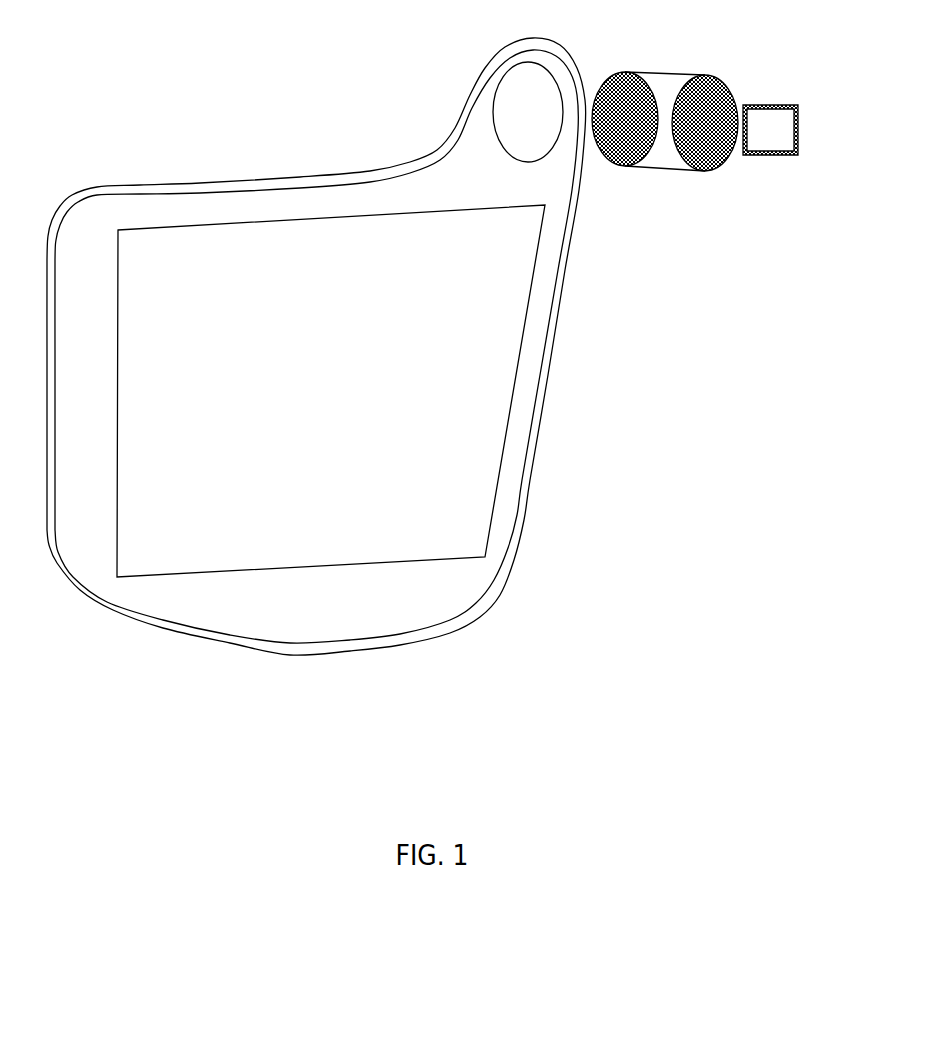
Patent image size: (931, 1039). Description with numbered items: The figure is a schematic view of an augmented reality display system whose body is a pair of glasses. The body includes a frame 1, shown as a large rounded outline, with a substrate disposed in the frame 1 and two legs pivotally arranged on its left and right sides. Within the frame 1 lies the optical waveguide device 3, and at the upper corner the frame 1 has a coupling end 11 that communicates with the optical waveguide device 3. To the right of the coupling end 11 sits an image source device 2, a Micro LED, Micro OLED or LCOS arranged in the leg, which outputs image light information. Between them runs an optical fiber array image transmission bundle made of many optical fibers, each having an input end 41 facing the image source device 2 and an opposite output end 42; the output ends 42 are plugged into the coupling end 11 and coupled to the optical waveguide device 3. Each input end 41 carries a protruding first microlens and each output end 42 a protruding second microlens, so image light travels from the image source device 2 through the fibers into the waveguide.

The frame 1 is at (445, 175).
The coupling end 11 is at (527, 93).
The optical waveguide device 3 is at (225, 250).
The input end 41 is at (712, 75).
The output end 42 is at (620, 72).
The image source device 2 is at (765, 125).